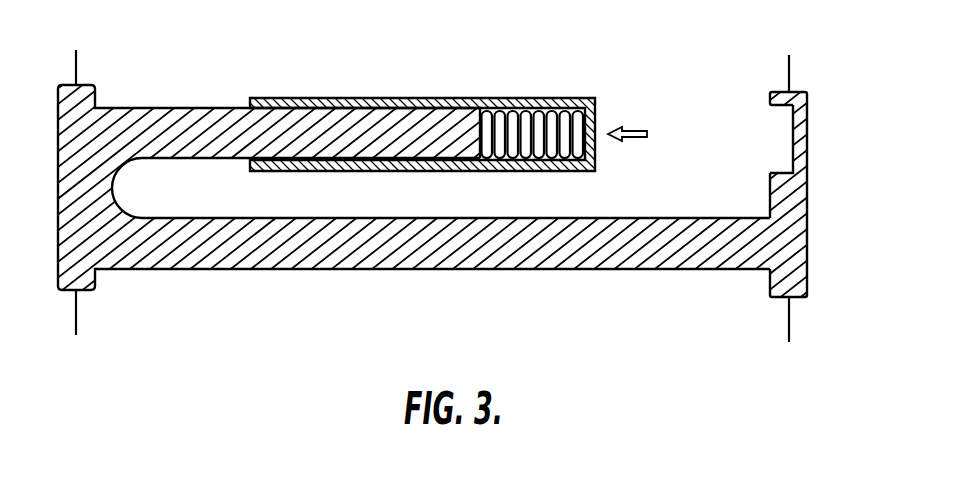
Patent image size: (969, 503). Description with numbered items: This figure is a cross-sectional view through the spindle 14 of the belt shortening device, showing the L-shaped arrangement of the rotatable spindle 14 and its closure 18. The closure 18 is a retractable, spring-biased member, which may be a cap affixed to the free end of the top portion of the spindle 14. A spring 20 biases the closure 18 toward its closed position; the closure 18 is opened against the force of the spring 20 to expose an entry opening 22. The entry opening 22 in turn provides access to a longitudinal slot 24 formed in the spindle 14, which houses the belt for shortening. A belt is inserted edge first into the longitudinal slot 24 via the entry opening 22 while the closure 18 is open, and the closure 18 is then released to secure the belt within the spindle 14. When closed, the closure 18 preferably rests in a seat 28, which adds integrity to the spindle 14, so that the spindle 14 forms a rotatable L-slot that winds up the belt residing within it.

The spindle 14 is at (200, 104).
The closure 18 is at (512, 108).
The spring 20 is at (554, 137).
The entry opening 22 is at (718, 125).
The longitudinal slot 24 is at (199, 201).
The seat 28 is at (796, 148).